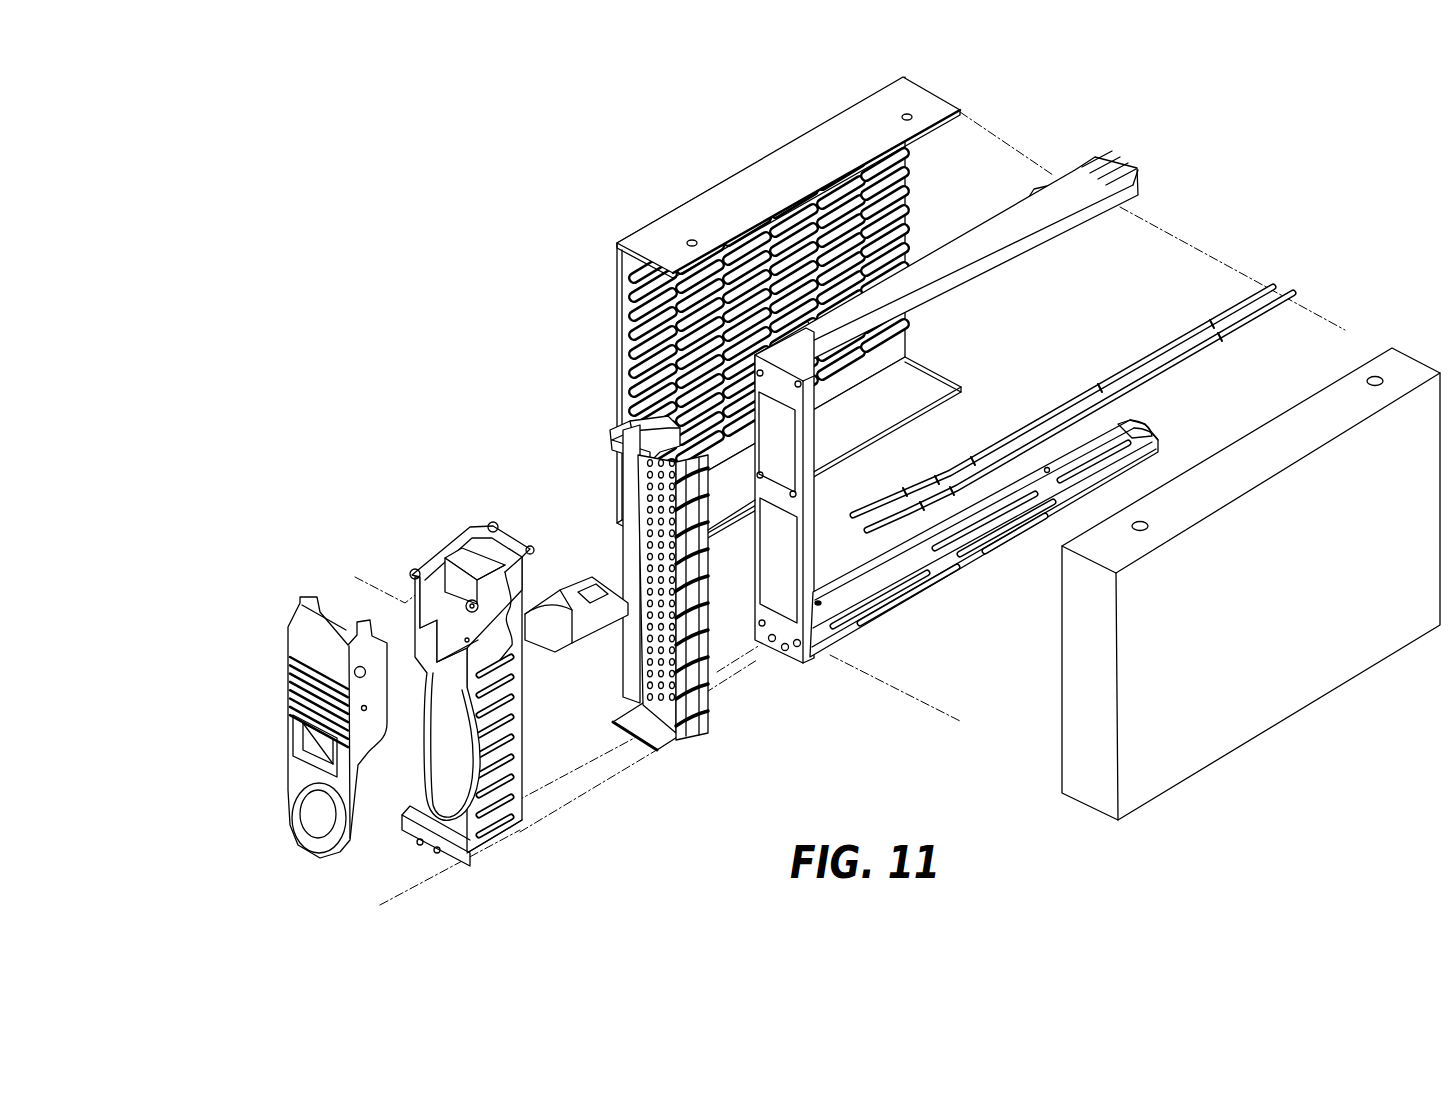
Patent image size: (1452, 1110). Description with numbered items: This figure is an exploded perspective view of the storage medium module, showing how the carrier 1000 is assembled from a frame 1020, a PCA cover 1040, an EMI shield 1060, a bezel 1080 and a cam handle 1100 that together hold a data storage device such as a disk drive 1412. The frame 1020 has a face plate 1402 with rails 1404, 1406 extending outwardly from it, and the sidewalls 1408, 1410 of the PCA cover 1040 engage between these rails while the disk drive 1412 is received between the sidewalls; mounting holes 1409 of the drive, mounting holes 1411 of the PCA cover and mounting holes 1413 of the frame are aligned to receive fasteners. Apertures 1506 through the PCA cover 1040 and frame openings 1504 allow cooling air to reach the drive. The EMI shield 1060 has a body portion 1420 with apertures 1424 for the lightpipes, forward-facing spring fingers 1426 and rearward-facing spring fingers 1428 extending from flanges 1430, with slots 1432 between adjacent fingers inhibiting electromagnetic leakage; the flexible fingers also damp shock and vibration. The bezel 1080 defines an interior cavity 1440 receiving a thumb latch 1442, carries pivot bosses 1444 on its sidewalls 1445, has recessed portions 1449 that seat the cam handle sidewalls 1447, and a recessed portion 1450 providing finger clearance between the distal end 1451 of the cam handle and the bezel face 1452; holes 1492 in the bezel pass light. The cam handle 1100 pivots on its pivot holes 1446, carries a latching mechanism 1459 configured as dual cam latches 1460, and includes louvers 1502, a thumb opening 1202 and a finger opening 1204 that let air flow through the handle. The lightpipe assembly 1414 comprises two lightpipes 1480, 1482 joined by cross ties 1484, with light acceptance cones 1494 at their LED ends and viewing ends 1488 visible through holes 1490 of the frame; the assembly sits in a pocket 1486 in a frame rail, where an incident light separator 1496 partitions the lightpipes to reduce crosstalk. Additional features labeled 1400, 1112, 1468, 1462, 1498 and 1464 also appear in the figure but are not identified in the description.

The carrier 1000 is at (353, 153).
The module assembly 1400 is at (347, 333).
The PCA cover 1040 is at (770, 302).
The face plate 1402 is at (757, 300).
The apertures 1506 is at (798, 260).
The lightpipe assembly 1414 is at (1002, 444).
The sidewall 1408 is at (774, 162).
The mounting holes 1411 is at (909, 113).
The mounting holes 1413 is at (814, 318).
The frame 1020 is at (946, 269).
The rail 1404 is at (958, 280).
The sidewall 1410 is at (893, 530).
The rearward-facing spring fingers 1428 is at (768, 450).
The holes 1490 is at (786, 657).
The lightpipe 1480 is at (1069, 373).
The lightpipe 1482 is at (1187, 347).
The incident light separator 1496 is at (977, 522).
The cross ties 1484 is at (1100, 391).
The light acceptance cones 1494 is at (1268, 282).
The viewing ends 1488 is at (866, 526).
The rail 1406 is at (1014, 519).
The channel arrangement (pocket) 1486 is at (1137, 425).
The disk drive 1412 is at (1201, 555).
The mounting holes 1409 is at (1375, 376).
The forward-facing spring fingers 1426 is at (620, 432).
The EMI shield 1060 is at (655, 621).
The body portion 1420 is at (646, 623).
The flanges 1430 is at (632, 674).
The apertures 1424 is at (672, 715).
The thumb latch 1442 is at (650, 560).
The slots 1432 is at (715, 624).
The rings 1112 is at (665, 732).
The frame openings 1504 is at (783, 462).
The pin block 1468 is at (549, 614).
The interior cavity 1440 is at (479, 684).
The recessed portion 1450 is at (468, 820).
The bracket base 1462 is at (412, 860).
The holes 1492 is at (436, 853).
The face 1452 is at (420, 807).
The pivot bosses 1444 is at (441, 558).
The pins 1498 is at (528, 546).
The bezel 1080 is at (487, 655).
The recessed portion 1449 is at (495, 700).
The sidewalls 1445 is at (517, 780).
The latching mechanism 1459 is at (298, 683).
The cam latches 1460 is at (298, 725).
The louvers 1502 is at (290, 668).
The pivot holes 1446 is at (363, 667).
The sidewalls 1447 is at (375, 716).
The window 1464 is at (257, 751).
The cam handle 1100 is at (316, 752).
The thumb opening 1202 is at (292, 722).
The distal end 1451 is at (294, 849).
The finger opening 1204 is at (323, 813).